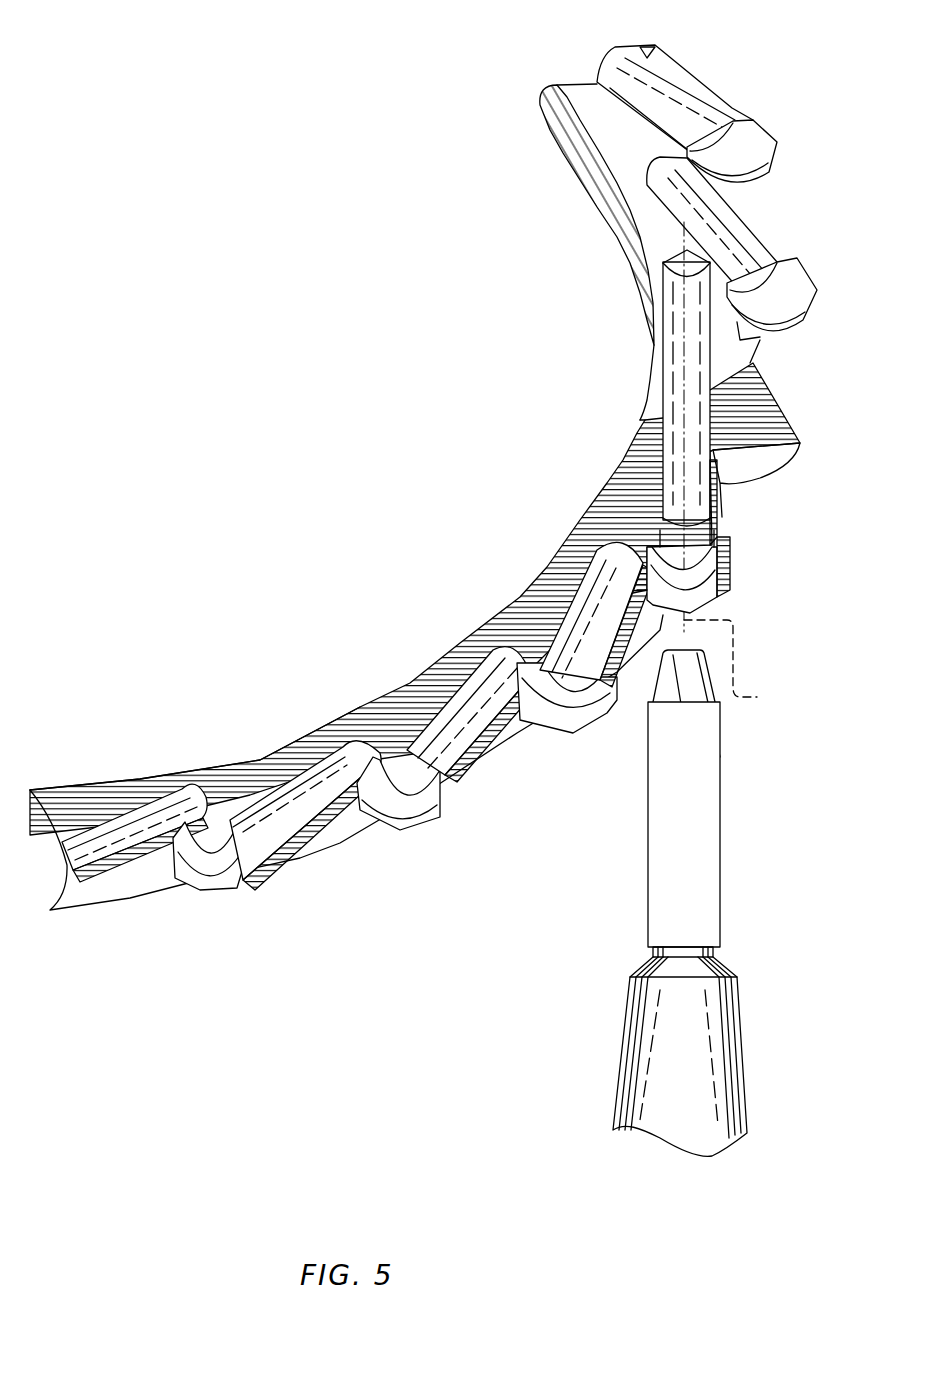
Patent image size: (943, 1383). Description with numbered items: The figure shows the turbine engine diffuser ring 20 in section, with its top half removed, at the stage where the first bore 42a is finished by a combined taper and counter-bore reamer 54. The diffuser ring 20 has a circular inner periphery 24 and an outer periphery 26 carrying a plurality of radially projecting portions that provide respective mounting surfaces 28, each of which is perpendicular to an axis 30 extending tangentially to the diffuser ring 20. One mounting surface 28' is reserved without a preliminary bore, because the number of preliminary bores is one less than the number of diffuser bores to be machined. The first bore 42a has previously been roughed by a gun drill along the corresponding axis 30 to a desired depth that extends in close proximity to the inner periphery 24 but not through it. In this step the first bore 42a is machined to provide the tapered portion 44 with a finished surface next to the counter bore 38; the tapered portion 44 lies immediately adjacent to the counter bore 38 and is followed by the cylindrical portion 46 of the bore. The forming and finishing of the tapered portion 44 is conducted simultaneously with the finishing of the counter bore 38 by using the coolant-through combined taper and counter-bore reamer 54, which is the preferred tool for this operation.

The diffuser ring 20 is at (263, 712).
The inner periphery 24 is at (403, 686).
The outer periphery 26 is at (340, 833).
The mounting surface 28 is at (707, 218).
The mounting surface 28' is at (767, 437).
The axis 30 is at (740, 666).
The counter bore 38 is at (730, 580).
The first bore 42a is at (672, 366).
The tapered portion 44 is at (725, 540).
The cylindrical portion 46 is at (634, 440).
The combined taper and counter-bore reamer 54 is at (722, 833).